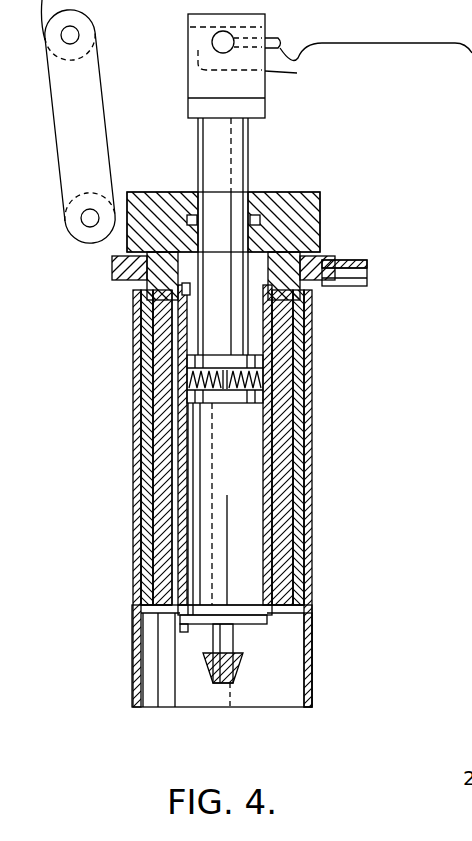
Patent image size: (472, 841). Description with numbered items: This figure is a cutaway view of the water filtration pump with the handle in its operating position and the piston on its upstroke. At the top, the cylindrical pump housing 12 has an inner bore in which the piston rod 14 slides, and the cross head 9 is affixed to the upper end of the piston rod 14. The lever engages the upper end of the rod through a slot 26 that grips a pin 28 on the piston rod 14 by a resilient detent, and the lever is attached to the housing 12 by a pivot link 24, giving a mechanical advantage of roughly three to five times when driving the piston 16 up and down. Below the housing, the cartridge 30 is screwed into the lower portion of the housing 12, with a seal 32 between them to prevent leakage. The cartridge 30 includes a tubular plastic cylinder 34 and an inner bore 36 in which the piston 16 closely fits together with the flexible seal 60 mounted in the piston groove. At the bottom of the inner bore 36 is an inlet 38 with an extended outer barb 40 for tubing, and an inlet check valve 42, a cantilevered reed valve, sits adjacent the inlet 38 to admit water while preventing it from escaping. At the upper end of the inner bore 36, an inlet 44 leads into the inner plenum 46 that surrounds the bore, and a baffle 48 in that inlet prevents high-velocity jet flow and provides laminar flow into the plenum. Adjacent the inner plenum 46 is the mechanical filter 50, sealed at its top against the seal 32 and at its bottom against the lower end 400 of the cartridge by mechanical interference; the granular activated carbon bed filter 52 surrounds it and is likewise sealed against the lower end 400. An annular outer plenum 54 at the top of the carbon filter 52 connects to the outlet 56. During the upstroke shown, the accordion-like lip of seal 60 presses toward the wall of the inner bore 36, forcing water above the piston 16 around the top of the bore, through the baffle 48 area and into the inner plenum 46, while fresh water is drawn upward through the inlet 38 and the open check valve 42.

The cross head 9 is at (204, 66).
The pump housing 12 is at (295, 192).
The piston rod 14 is at (255, 155).
The piston 16 is at (219, 449).
The pivot link 24 is at (109, 126).
The slot 26 is at (297, 73).
The pin 28 is at (213, 42).
The cartridge 30 is at (202, 498).
The seal 32 is at (303, 252).
The tubular plastic cylinder 34 is at (261, 656).
The inner bore 36 is at (227, 495).
The inlet 38 is at (285, 614).
The outer barb 40 is at (210, 655).
The inlet check valve 42 is at (205, 602).
The inlet 44 is at (150, 315).
The inner plenum 46 is at (180, 438).
The baffle 48 is at (187, 295).
The mechanical filter 50 is at (152, 551).
The granular activated carbon bed filter 52 is at (142, 532).
The outer plenum 54 is at (112, 268).
The outlet 56 is at (367, 271).
The flexible seal 60 is at (303, 369).
The lower end 400 is at (310, 656).